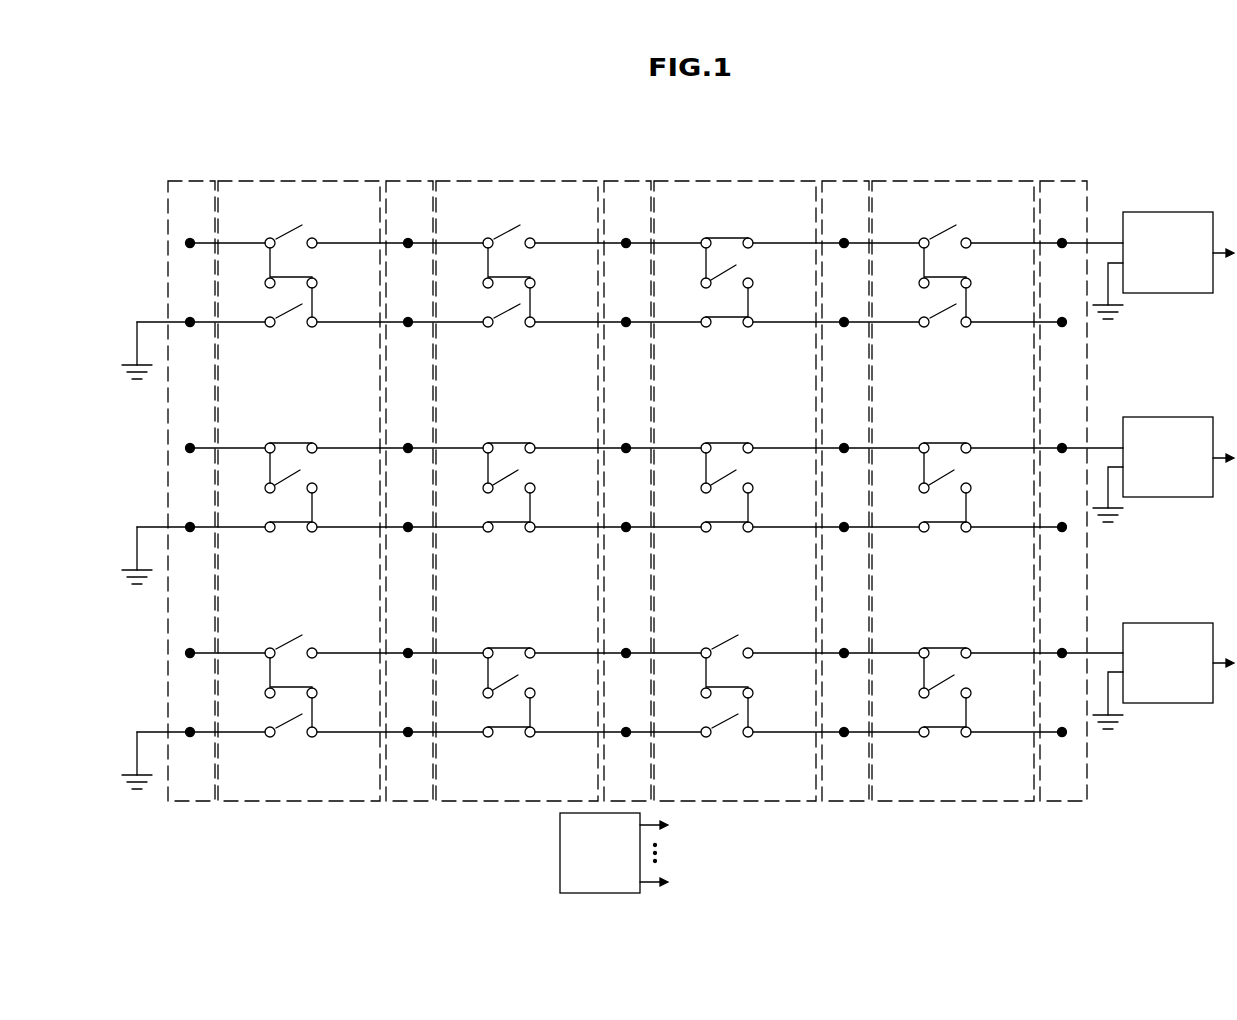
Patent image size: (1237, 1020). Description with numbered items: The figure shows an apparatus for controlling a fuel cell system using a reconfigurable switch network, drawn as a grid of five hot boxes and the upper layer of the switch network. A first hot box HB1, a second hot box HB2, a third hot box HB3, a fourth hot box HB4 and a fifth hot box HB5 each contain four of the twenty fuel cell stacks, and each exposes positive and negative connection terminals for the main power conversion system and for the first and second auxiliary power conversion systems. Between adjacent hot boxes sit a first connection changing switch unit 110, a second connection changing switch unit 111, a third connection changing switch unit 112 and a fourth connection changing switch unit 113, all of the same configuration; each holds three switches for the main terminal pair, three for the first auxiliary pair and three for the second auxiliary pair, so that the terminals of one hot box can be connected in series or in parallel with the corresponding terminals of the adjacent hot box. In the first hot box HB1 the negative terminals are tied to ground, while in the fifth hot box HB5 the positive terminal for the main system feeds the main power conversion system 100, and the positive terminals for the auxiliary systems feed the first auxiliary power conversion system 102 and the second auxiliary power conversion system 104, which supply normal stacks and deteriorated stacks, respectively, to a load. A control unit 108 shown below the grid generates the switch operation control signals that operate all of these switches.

The main power conversion system 100 is at (1163, 236).
The first auxiliary power conversion system 102 is at (1163, 440).
The second auxiliary power conversion system 104 is at (1163, 646).
The control unit 108 is at (560, 852).
The first connection changing switch unit 110 is at (299, 462).
The second connection changing switch unit 111 is at (517, 462).
The third connection changing switch unit 112 is at (735, 462).
The fourth connection changing switch unit 113 is at (953, 462).
The first hot box HB1 is at (191, 462).
The second hot box HB2 is at (409, 462).
The third hot box HB3 is at (627, 462).
The fourth hot box HB4 is at (845, 462).
The fifth hot box HB5 is at (1063, 462).